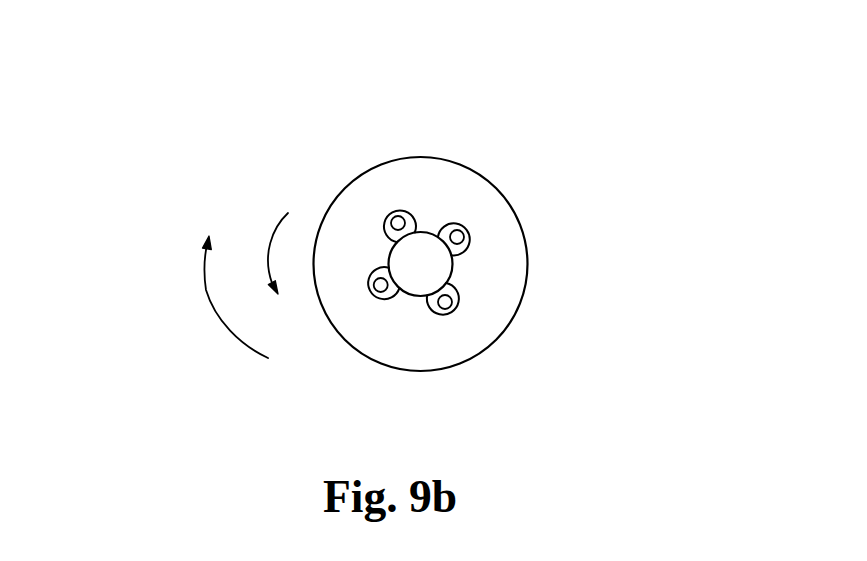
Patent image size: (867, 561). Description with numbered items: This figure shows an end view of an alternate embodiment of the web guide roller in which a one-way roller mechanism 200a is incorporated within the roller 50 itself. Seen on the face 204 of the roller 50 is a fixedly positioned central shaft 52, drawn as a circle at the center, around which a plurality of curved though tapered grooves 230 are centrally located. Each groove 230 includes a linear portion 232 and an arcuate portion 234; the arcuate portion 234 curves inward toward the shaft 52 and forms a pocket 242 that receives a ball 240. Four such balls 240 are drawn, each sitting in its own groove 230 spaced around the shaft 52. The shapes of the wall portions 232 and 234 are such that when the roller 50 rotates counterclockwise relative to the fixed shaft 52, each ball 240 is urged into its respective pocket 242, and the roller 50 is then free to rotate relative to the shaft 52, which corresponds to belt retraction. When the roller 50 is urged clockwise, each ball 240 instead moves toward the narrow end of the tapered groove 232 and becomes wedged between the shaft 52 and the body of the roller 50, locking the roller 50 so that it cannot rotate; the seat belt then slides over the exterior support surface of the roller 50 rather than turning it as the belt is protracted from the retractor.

The roller 50 is at (509, 248).
The shaft 52 is at (419, 255).
The one-way roller mechanism 200a is at (322, 235).
The face 204 is at (505, 270).
The curved tapered groove 230 is at (322, 235).
The linear portion 232 is at (384, 299).
The arcuate portion 234 is at (416, 218).
The ball 240 is at (396, 216).
The pocket 242 is at (467, 224).